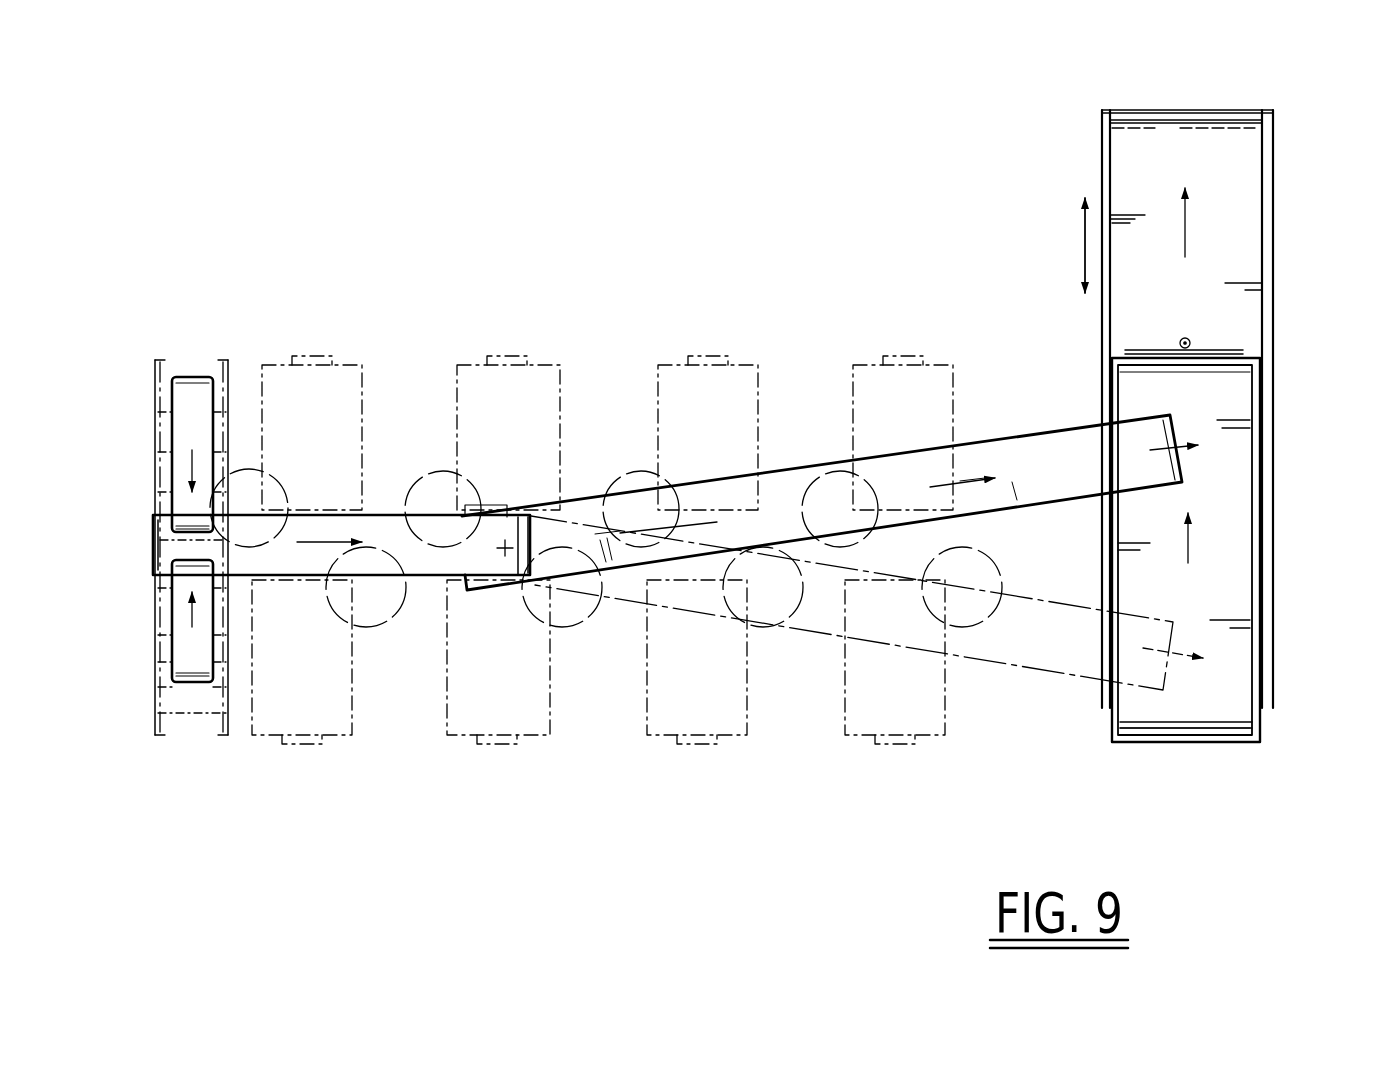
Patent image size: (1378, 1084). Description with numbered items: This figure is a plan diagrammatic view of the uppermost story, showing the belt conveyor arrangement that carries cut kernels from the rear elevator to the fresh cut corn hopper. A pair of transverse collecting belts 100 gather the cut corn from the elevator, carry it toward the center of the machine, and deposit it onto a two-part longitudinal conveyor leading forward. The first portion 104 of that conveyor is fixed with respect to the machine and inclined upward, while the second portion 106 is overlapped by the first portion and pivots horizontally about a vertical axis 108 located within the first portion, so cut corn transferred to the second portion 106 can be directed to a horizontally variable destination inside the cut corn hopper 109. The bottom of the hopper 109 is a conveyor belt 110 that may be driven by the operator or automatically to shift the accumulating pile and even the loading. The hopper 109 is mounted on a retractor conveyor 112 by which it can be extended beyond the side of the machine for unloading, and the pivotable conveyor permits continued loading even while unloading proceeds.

The transverse collecting belts 100 is at (167, 470).
The first portion 104 is at (428, 572).
The second portion 106 is at (1033, 452).
The vertical axis 108 is at (503, 543).
The cut corn hopper 109 is at (1257, 520).
The conveyor belt 110 is at (1232, 595).
The retractor conveyor 112 is at (1240, 212).